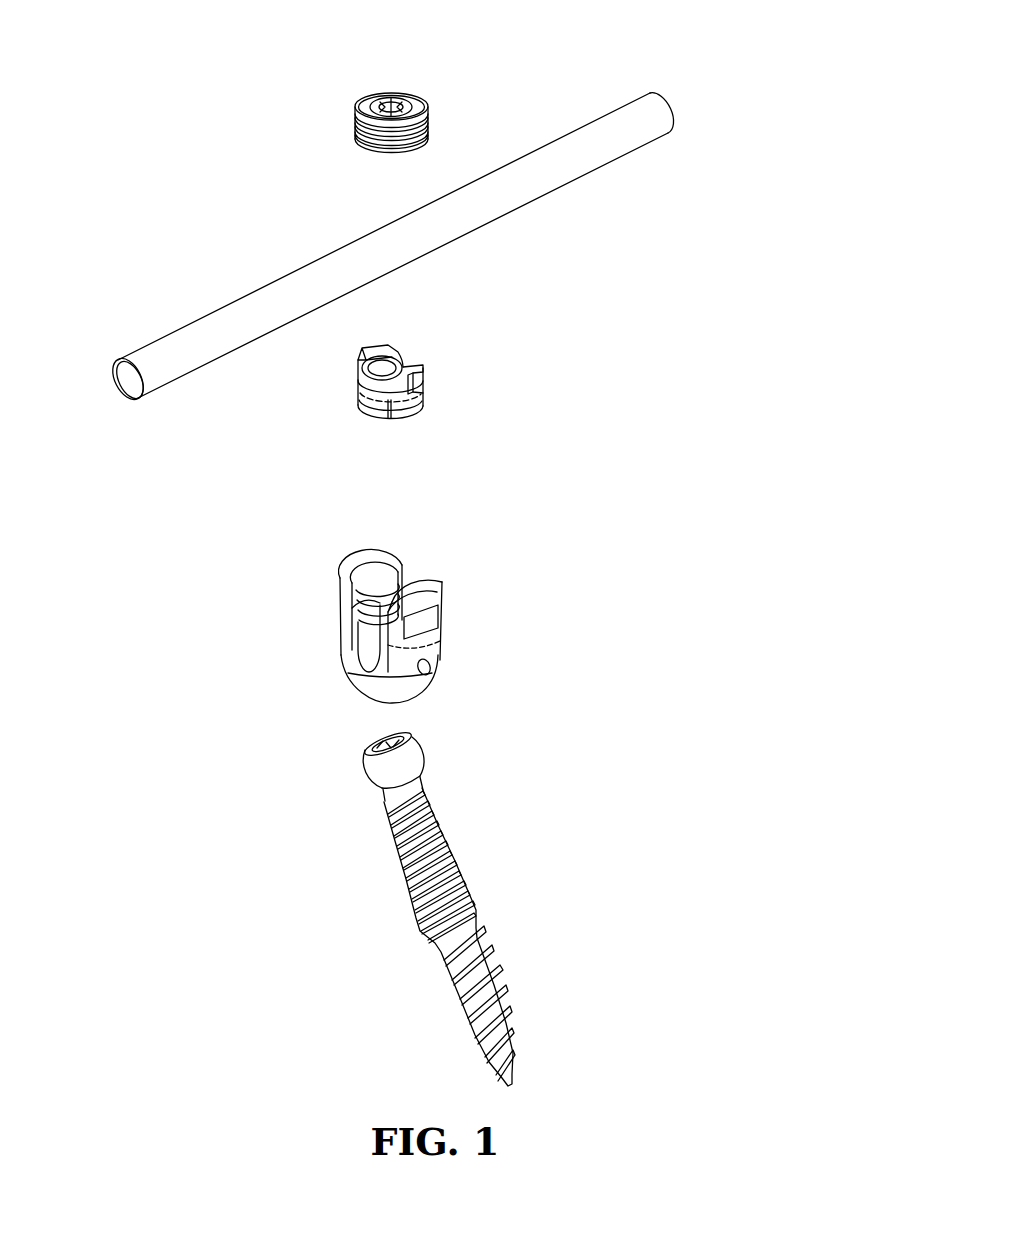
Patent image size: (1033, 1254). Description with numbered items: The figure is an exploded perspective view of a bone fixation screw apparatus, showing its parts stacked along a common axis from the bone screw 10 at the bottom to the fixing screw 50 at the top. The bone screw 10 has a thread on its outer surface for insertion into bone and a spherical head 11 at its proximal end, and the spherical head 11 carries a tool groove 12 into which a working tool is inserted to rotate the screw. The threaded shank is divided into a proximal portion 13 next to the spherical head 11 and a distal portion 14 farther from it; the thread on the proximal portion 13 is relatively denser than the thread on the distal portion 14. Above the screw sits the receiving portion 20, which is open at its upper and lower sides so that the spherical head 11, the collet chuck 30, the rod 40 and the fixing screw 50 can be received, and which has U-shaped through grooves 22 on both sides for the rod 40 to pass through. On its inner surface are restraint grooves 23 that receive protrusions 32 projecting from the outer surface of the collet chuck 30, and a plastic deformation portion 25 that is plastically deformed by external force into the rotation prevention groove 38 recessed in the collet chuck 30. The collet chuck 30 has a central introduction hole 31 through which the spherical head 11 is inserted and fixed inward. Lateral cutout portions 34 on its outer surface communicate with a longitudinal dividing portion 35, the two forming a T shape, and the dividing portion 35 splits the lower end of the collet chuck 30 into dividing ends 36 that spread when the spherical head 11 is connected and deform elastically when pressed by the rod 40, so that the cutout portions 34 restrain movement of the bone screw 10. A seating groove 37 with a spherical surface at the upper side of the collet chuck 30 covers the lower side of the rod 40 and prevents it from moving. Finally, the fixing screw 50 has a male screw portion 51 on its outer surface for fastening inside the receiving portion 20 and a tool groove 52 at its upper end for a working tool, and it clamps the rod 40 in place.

The bone screw 10 is at (414, 908).
The spherical head 11 is at (340, 790).
The tool groove 12 is at (377, 737).
The proximal portion 13 is at (432, 934).
The distal portion 14 is at (498, 1088).
The receiving portion 20 is at (402, 621).
The U-shaped through groove 22 is at (354, 660).
The restraint groove 23 is at (354, 633).
The plastic deformation portion 25 is at (431, 670).
The collet chuck 30 is at (399, 404).
The introduction hole 31 is at (393, 364).
The protrusion 32 is at (423, 364).
The cutout portion 34 is at (400, 418).
The dividing portion 35 is at (388, 408).
The dividing end 36 is at (412, 412).
The seating groove 37 is at (360, 373).
The rotation prevention groove 38 is at (424, 383).
The rod 40 is at (694, 80).
The fixing screw 50 is at (411, 102).
The male screw portion 51 is at (362, 143).
The tool groove 52 is at (390, 106).